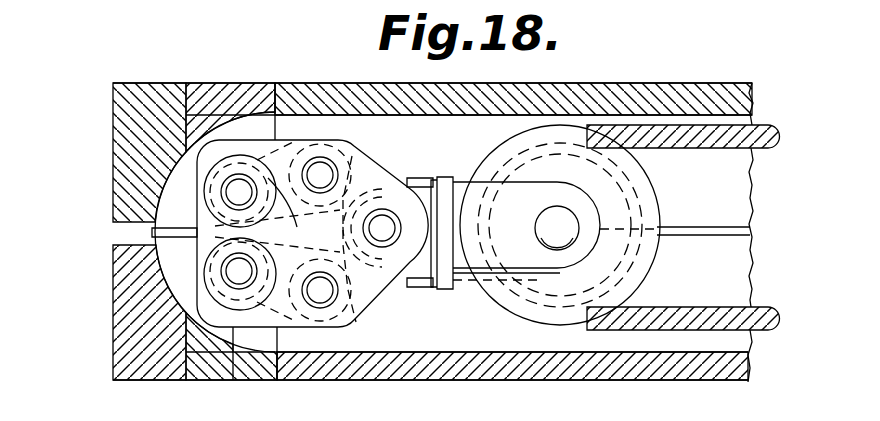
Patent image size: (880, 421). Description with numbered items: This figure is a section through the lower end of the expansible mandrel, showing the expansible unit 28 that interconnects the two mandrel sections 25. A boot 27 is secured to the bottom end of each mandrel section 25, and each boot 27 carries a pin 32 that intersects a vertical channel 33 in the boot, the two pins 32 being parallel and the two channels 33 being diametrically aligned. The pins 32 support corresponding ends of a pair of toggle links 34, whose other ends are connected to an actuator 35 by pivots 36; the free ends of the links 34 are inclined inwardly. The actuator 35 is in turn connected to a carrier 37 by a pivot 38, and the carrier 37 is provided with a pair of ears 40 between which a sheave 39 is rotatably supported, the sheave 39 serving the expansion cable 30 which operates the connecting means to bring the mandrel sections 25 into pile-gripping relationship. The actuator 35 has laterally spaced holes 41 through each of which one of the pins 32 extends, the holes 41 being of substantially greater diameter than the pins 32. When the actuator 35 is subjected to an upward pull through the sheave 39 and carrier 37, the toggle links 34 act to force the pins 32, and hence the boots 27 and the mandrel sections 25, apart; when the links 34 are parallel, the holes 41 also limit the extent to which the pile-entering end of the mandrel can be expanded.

The mandrel section 25 is at (703, 85).
The boot 27 is at (109, 129).
The expansible unit 28 is at (374, 154).
The expansion cable 30 is at (770, 149).
The pin 32 is at (240, 188).
The vertical channel 33 is at (262, 346).
The toggle link 34 is at (311, 147).
The actuator 35 is at (375, 176).
The pivot 36 is at (329, 162).
The carrier 37 is at (439, 179).
The pivot 38 is at (404, 288).
The sheave 39 is at (646, 202).
The ear 40 is at (523, 262).
The hole 41 is at (285, 232).